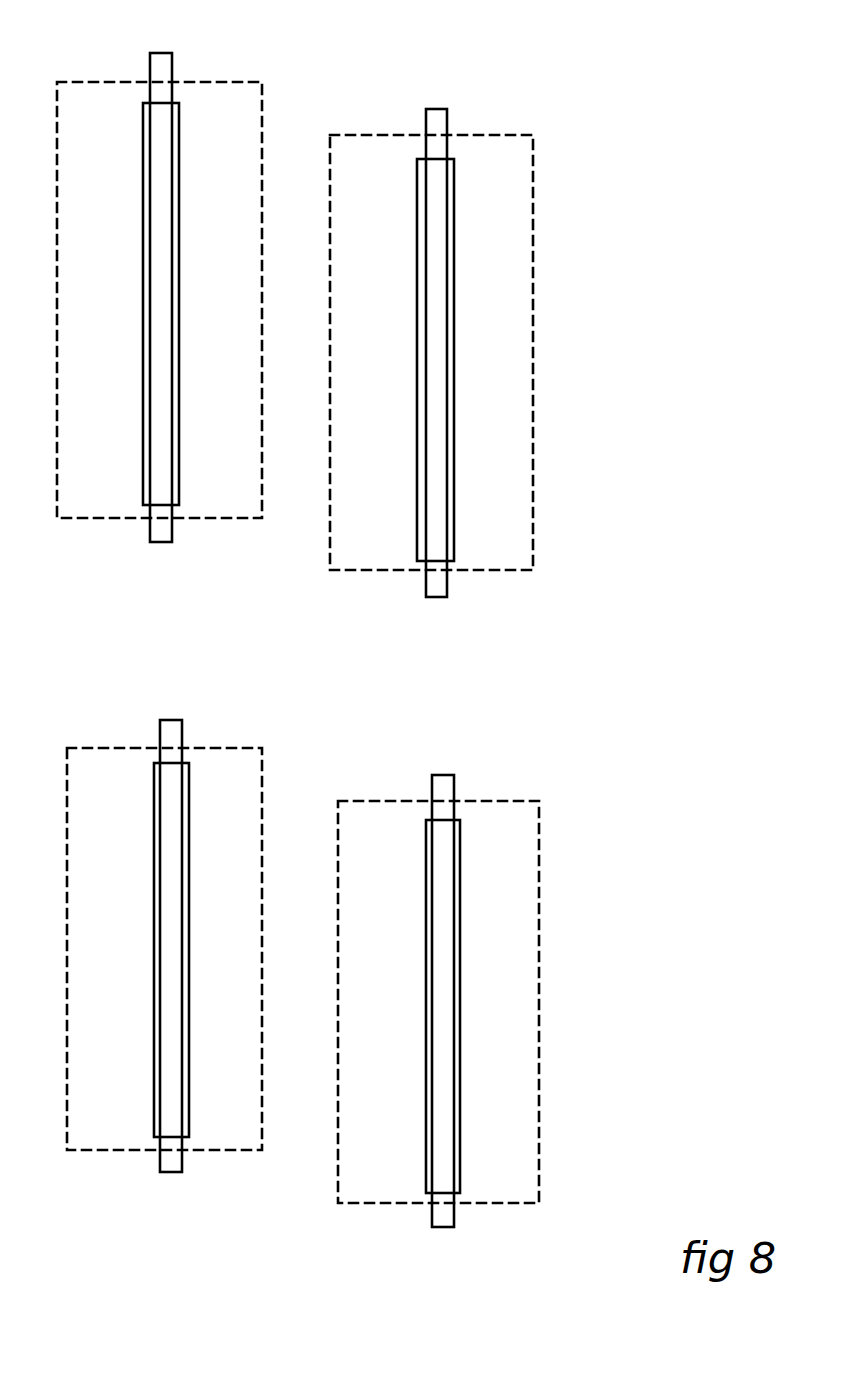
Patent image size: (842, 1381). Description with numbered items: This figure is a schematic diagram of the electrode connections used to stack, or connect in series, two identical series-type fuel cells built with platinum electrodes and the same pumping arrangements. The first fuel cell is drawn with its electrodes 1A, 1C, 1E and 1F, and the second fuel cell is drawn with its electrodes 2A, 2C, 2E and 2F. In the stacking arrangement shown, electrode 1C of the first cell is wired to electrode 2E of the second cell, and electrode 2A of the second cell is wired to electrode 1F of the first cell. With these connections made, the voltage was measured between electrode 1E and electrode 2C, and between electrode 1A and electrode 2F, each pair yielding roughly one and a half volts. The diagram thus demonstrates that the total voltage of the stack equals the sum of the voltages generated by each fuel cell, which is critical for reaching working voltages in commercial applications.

The electrode of first fuel cell 1A is at (334, 631).
The electrode of first fuel cell 1C is at (415, 624).
The electrode of first fuel cell 1E is at (110, 582).
The electrode of first fuel cell 1F is at (314, 632).
The electrode of second fuel cell 2A is at (164, 917).
The electrode of second fuel cell 2C is at (334, 938).
The electrode of second fuel cell 2E is at (228, 1210).
The electrode of second fuel cell 2F is at (516, 1263).